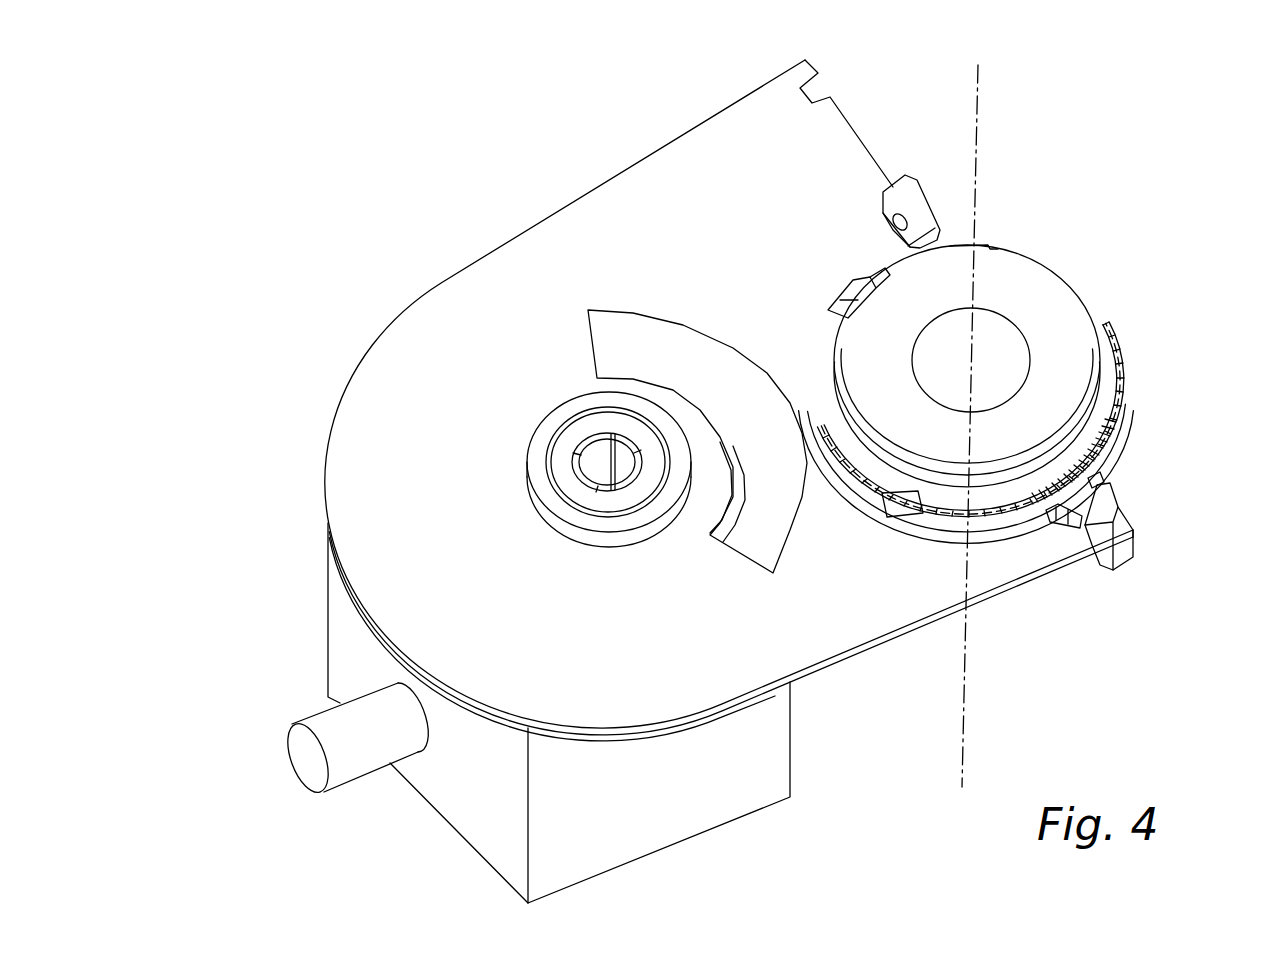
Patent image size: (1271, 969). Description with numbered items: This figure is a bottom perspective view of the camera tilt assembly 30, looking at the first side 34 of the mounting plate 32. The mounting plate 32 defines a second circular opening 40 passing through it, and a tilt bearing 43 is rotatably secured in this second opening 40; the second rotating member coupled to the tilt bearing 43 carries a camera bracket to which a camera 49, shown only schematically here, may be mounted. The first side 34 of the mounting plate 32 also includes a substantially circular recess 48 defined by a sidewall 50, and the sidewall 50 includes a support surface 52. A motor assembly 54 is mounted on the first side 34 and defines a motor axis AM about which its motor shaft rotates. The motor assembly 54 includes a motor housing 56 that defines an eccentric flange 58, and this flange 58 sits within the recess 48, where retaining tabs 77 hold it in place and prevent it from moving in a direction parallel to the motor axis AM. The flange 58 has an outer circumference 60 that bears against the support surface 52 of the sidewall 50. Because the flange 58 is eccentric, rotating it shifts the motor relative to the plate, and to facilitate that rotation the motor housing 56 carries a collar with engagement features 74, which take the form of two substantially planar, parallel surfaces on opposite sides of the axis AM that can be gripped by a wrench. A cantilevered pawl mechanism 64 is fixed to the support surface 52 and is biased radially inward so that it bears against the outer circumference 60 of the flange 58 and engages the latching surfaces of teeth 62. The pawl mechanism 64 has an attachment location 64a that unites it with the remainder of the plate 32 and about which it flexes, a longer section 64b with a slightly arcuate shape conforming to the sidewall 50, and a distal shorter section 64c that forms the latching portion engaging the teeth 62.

The camera tilt assembly 30 is at (920, 93).
The mounting plate 32 is at (540, 222).
The first side 34 is at (400, 350).
The second circular opening 40 is at (565, 535).
The tilt bearing 43 is at (577, 463).
The circular recess 48 is at (1105, 482).
The camera 49 is at (328, 617).
The sidewall 50 is at (965, 537).
The support surface 52 is at (987, 508).
The motor assembly 54 is at (1060, 273).
The motor housing 56 is at (1083, 360).
The eccentric flange 58 is at (1107, 405).
The outer circumference 60 is at (1110, 332).
The teeth 62 is at (1097, 317).
The pawl mechanism 64 is at (1065, 508).
The attachment location 64a is at (1078, 507).
The longer section 64b is at (1133, 540).
The distal shorter section 64c is at (1097, 480).
The engagement features 74 is at (835, 405).
The retaining tabs 77 is at (845, 303).
The motor axis AM is at (977, 87).